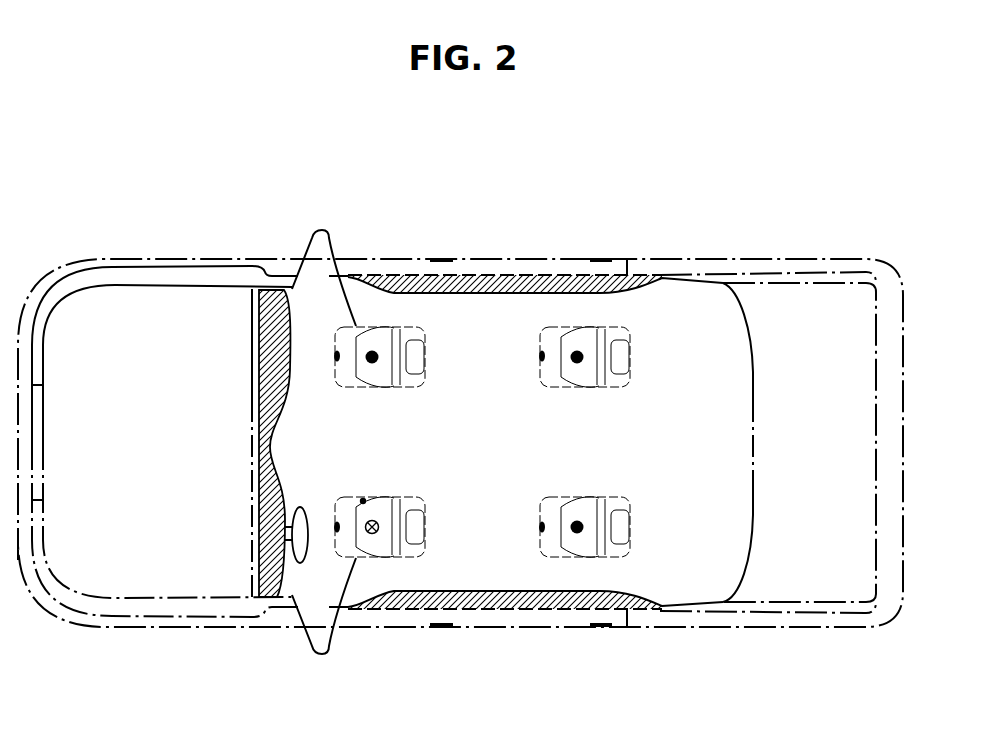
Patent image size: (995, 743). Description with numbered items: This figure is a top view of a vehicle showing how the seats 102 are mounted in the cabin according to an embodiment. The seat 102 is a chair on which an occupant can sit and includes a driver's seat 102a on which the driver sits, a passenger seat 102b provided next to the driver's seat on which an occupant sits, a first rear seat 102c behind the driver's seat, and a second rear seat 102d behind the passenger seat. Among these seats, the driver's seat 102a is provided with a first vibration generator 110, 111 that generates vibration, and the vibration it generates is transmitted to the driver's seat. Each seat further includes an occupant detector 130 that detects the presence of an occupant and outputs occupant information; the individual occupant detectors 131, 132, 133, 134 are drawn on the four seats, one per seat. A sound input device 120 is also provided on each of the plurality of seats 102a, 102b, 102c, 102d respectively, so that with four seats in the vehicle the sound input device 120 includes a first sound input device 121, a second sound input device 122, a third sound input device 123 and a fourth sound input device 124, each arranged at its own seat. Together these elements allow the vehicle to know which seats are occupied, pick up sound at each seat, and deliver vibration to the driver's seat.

The seat 102 is at (473, 442).
The driver's seat 102a is at (393, 553).
The passenger seat 102b is at (328, 234).
The first rear seat 102c is at (603, 549).
The second rear seat 102d is at (562, 330).
The first vibration generator 110 is at (251, 443).
The first vibration generator 111 is at (363, 501).
The sound input device 120 is at (238, 535).
The first sound input device 121 is at (337, 527).
The second sound input device 122 is at (337, 356).
The third sound input device 123 is at (543, 548).
The fourth sound input device 124 is at (541, 350).
The occupant detector 130 is at (422, 411).
The occupant detector 131 is at (365, 527).
The occupant detector 132 is at (365, 357).
The occupant detector 133 is at (580, 534).
The occupant detector 134 is at (580, 352).